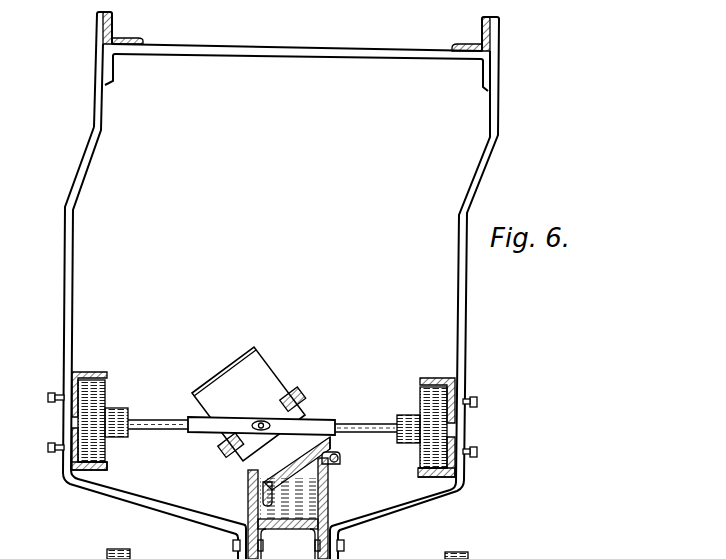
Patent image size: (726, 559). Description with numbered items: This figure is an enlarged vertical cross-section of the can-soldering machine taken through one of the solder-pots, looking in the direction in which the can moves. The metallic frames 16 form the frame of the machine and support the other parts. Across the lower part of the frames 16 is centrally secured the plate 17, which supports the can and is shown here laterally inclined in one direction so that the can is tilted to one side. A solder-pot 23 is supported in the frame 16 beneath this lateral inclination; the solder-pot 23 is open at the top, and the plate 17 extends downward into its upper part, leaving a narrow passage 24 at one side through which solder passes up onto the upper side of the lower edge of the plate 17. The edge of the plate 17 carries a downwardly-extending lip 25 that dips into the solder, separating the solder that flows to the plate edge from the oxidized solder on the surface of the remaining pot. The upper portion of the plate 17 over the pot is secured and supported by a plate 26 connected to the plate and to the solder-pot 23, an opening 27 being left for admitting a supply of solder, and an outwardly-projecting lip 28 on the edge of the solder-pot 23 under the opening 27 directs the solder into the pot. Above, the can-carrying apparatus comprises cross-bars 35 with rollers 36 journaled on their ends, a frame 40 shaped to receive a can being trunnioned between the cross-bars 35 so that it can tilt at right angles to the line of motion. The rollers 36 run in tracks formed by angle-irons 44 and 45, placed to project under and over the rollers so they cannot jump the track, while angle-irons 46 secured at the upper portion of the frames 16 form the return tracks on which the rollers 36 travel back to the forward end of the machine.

The metallic frames 16 is at (66, 291).
The angle-irons 46 is at (150, 29).
The angle-iron 45 is at (140, 348).
The rollers 36 is at (95, 408).
The frame 40 is at (338, 387).
The cross-bars 35 is at (382, 397).
The plate 26 is at (331, 442).
The plate 17 is at (350, 451).
The downwardly-extending lip 25 is at (262, 496).
The outwardly-projecting lip 28 is at (336, 461).
The narrow passage 24 is at (252, 488).
The opening 27 is at (291, 492).
The solder-pots 23 is at (292, 530).
The angle-iron 44 is at (98, 472).